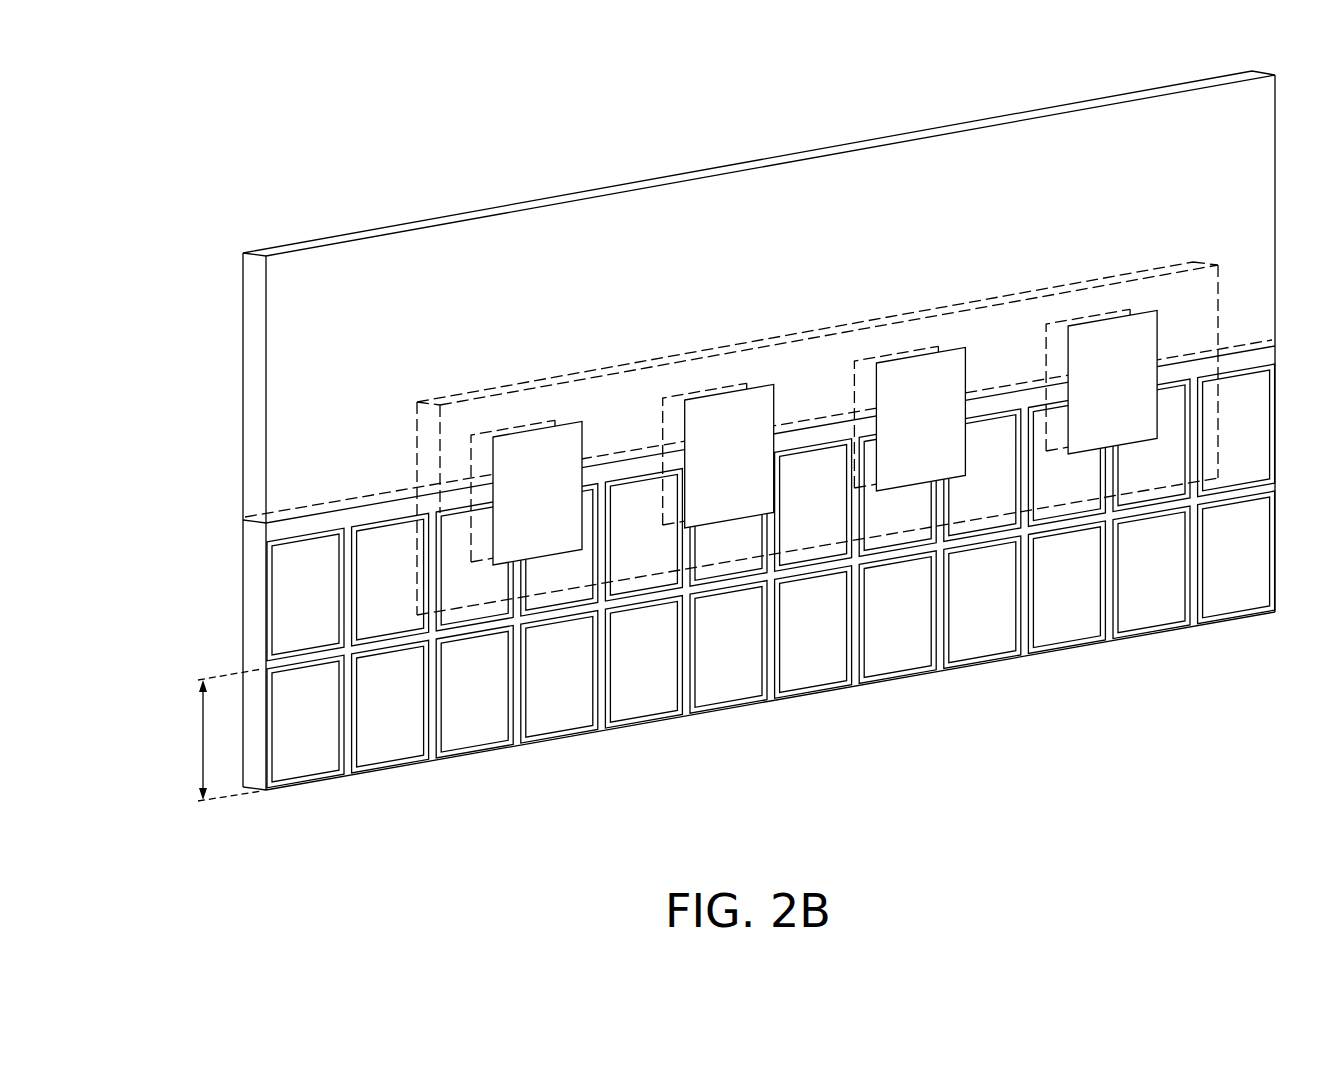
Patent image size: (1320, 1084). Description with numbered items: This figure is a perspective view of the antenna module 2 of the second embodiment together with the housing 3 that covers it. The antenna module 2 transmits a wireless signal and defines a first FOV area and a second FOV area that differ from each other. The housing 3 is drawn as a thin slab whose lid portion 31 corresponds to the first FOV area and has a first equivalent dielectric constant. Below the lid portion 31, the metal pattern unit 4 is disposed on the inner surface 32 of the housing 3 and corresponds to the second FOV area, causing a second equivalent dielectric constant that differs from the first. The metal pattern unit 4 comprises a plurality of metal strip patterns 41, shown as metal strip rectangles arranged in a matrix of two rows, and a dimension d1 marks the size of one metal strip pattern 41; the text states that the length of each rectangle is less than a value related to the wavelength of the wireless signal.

The antenna module 2 is at (560, 572).
The housing 3 is at (242, 478).
The lid portion 31 is at (293, 389).
The inner surface 32 is at (280, 530).
The metal pattern unit 4 is at (771, 585).
The metal strip patterns 41 is at (390, 766).
The cell height dimension d1 is at (217, 735).